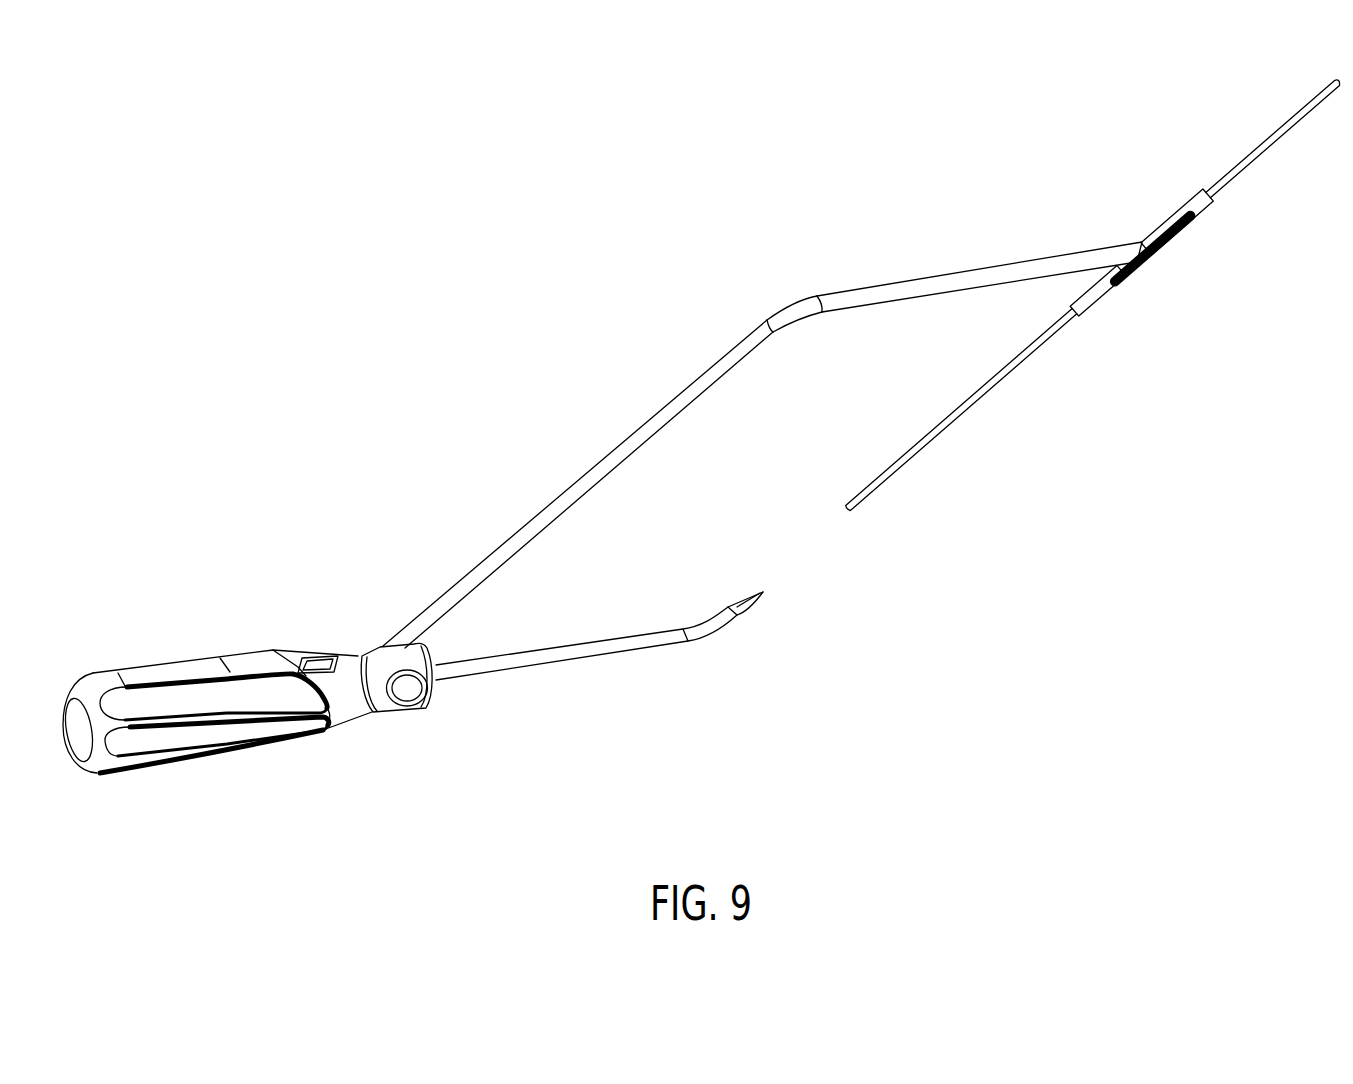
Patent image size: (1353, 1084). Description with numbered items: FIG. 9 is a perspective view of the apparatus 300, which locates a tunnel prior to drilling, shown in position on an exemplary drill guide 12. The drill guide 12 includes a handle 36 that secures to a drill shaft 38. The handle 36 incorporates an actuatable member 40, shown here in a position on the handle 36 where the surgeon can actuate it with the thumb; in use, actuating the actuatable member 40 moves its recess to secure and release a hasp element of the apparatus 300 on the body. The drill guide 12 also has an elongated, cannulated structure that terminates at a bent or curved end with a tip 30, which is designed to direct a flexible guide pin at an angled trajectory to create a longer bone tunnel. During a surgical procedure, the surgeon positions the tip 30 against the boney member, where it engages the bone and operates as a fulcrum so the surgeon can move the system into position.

The apparatus 300 is at (700, 490).
The drill guide 12 is at (404, 738).
The handle 36 is at (383, 757).
The actuatable member 40 is at (338, 642).
The tip 30 is at (427, 720).
The drill shaft 38 is at (622, 683).